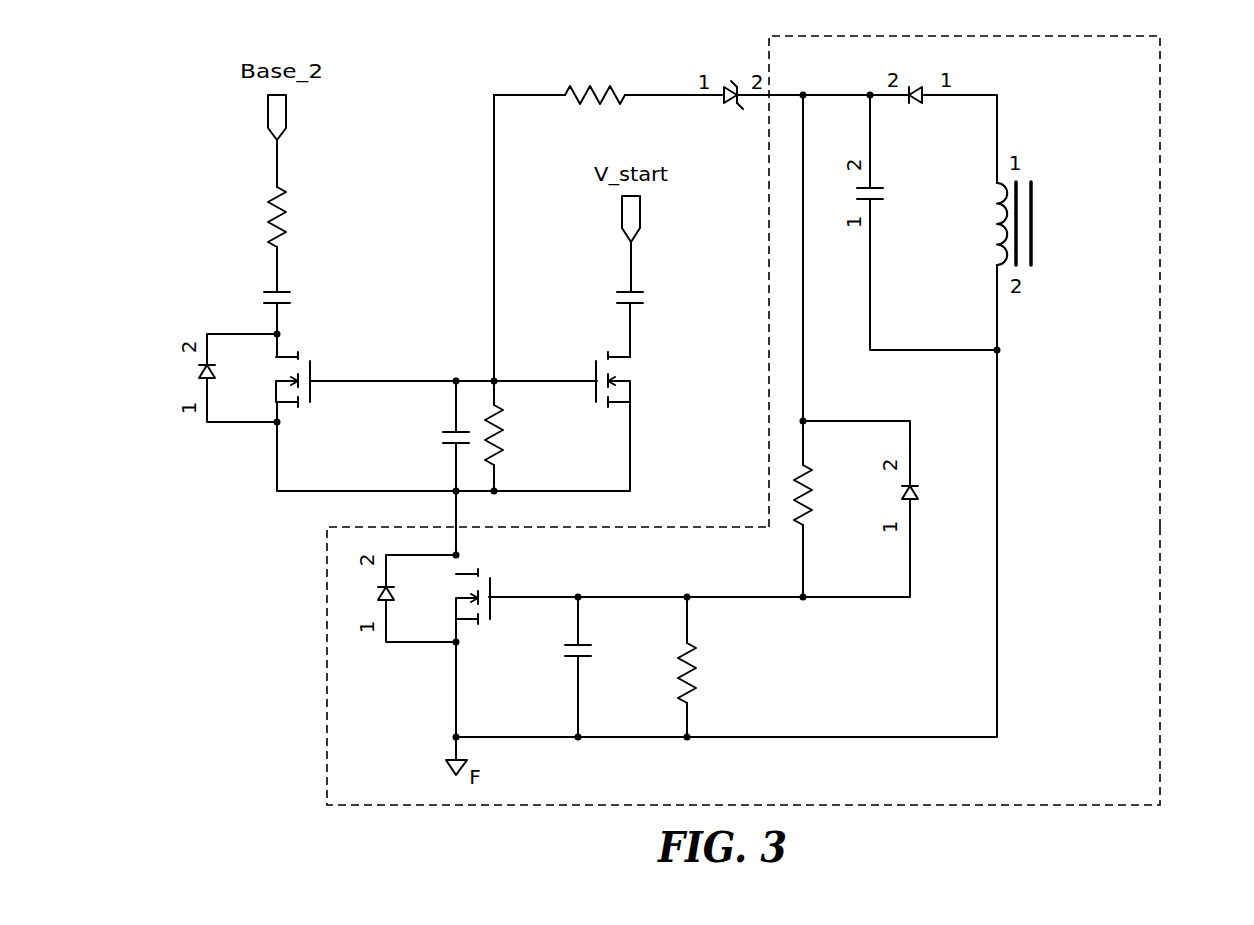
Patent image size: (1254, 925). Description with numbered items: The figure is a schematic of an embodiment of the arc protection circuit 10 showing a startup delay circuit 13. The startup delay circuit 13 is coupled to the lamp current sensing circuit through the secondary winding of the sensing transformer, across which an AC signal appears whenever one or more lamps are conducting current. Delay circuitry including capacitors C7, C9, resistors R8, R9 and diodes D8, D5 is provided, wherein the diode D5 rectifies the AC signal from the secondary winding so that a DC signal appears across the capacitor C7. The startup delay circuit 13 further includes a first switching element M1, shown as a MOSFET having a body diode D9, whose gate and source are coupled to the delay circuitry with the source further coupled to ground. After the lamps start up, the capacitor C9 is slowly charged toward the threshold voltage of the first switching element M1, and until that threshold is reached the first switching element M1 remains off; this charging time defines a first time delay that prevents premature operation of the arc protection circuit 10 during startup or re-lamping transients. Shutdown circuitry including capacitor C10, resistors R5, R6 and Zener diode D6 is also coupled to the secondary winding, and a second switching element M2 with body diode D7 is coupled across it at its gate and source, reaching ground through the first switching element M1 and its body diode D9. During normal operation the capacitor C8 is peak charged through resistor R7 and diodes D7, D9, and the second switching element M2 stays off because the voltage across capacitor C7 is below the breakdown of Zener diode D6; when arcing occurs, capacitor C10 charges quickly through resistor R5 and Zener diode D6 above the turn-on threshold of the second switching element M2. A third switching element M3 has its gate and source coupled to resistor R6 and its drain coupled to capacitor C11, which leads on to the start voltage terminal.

The arc protection circuit 10 is at (1192, 94).
The startup delay circuit 13 is at (1161, 572).
The resistor R5 is at (595, 80).
The resistor R6 is at (516, 435).
The resistor R7 is at (259, 217).
The resistor R8 is at (821, 495).
The resistor R9 is at (711, 673).
The capacitor C7 is at (887, 179).
The capacitor C8 is at (256, 296).
The capacitor C9 is at (595, 669).
The capacitor C10 is at (431, 424).
The capacitor C11 is at (653, 290).
The diode D5 is at (921, 74).
The Zener diode D6 is at (728, 78).
The body diode D7 is at (186, 377).
The diode D8 is at (928, 479).
The body diode D9 is at (365, 592).
The first switching element M1 is at (487, 609).
The second switching element M2 is at (273, 379).
The third switching element M3 is at (636, 379).